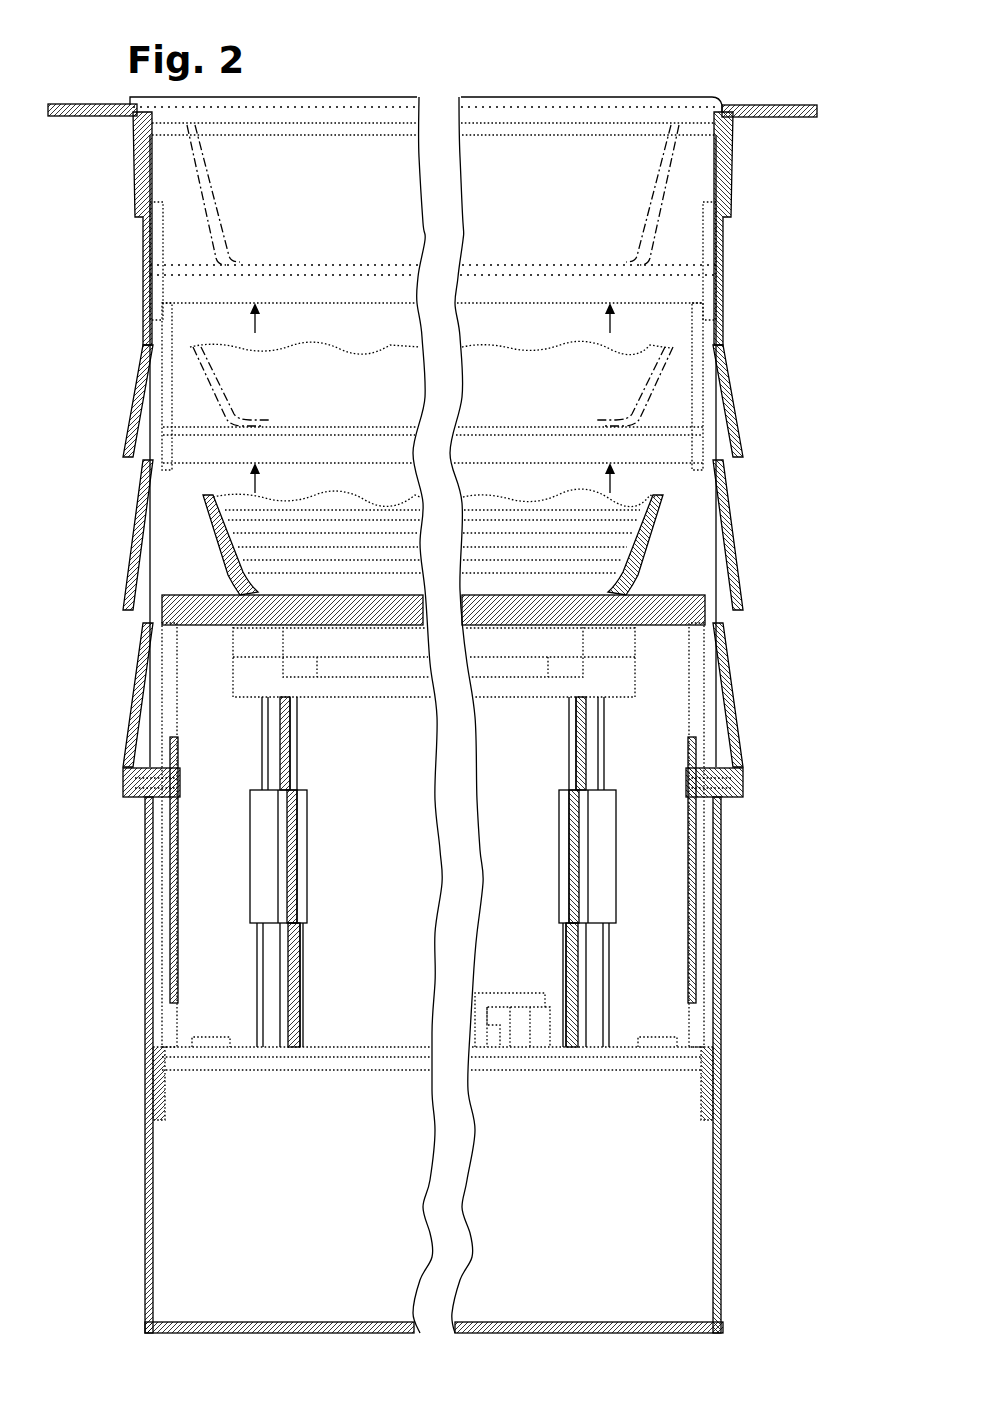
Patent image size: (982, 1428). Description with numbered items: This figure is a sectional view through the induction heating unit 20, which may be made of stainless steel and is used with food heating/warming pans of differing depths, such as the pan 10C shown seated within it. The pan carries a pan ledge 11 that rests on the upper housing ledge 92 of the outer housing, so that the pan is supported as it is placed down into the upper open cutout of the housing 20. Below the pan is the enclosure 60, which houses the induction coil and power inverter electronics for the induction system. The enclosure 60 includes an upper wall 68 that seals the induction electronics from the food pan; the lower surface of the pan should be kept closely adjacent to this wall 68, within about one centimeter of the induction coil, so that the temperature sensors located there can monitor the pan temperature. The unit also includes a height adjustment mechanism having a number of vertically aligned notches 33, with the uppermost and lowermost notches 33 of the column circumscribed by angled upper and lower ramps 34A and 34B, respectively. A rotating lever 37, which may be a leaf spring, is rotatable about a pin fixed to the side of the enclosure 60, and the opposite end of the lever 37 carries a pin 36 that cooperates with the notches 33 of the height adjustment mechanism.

The pan ledge 11 is at (721, 97).
The upper housing ledge 92 is at (772, 105).
The induction heating unit 20 is at (742, 170).
The upper ramp 34A is at (160, 236).
The notches 33 is at (130, 432).
The enclosure 60 is at (195, 588).
The capsule 10C is at (509, 569).
The upper wall 68 is at (683, 598).
The pin 36 is at (733, 800).
The rotating lever 37 is at (163, 868).
The lower ramp 34B is at (150, 1168).